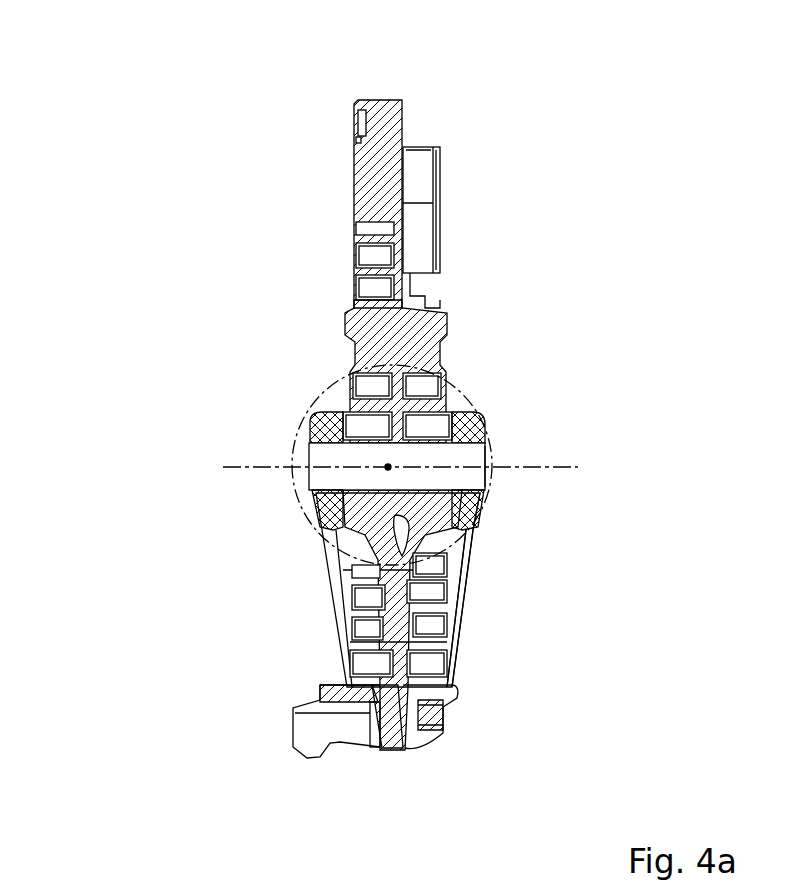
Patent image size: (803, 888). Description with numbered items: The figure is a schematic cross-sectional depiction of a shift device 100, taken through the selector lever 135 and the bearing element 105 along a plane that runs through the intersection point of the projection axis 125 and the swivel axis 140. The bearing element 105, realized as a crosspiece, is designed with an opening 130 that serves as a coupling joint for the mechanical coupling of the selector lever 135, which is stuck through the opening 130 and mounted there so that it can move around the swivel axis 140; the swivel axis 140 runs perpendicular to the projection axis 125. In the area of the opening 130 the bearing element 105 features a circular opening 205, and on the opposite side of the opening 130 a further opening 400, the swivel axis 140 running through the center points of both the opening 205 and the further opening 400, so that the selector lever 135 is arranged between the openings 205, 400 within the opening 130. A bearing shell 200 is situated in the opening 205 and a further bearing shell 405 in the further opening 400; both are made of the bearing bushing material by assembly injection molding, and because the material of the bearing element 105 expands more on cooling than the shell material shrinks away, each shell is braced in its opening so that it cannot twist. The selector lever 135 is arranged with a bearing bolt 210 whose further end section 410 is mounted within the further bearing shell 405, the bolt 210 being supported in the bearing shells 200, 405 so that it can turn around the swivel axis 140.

The shift device 100 is at (250, 243).
The bearing element 105 is at (492, 395).
The projection axis 125 is at (323, 527).
The opening 130 is at (360, 445).
The selector lever 135 is at (403, 125).
The swivel axis 140 is at (557, 467).
The bearing shell 200 is at (323, 413).
The opening 205 is at (305, 462).
The bearing bolt 210 is at (463, 535).
The further opening 400 is at (490, 455).
The further bearing shell 405 is at (468, 512).
The further end section 410 is at (487, 490).